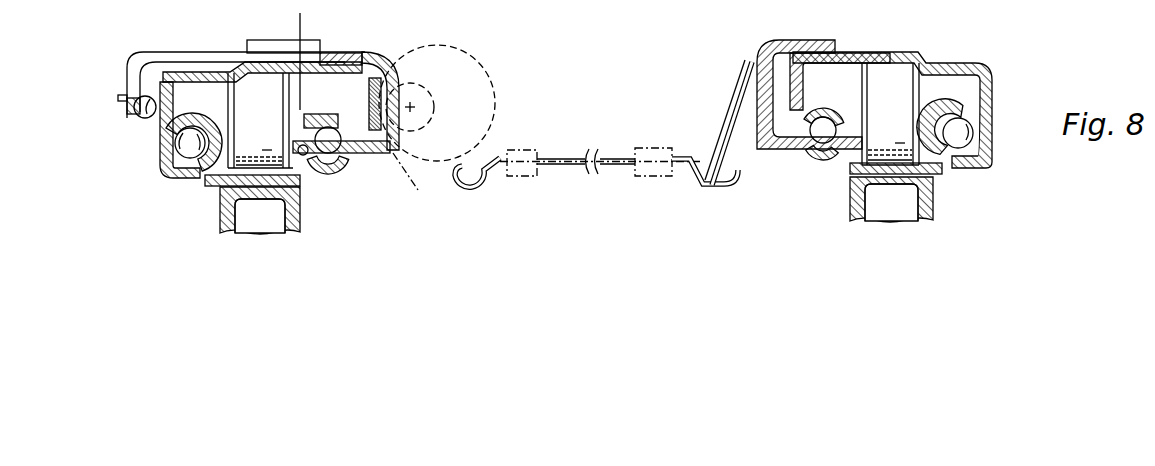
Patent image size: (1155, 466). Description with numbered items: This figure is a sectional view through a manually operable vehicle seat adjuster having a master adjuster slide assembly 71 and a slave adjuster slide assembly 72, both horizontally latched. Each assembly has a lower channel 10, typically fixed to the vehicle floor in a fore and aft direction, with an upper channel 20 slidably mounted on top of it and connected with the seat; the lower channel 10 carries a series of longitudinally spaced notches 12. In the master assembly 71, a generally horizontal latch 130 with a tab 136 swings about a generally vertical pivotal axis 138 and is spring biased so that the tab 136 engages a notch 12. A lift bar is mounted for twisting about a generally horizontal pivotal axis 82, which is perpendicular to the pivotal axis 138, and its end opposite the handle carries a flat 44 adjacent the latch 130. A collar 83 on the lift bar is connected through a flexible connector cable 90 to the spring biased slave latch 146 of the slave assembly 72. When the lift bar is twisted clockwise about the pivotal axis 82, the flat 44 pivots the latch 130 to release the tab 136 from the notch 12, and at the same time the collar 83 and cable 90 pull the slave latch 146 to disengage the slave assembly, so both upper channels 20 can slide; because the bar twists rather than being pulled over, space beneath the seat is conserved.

The lower channel 10 is at (210, 181).
The notches 12 is at (305, 156).
The upper channel 20 is at (172, 163).
The flat 44 is at (452, 186).
The master adjuster slide assembly 71 is at (172, 51).
The slave adjuster slide assembly 72 is at (800, 44).
The pivotal axis 82 is at (413, 104).
The collar 83 is at (482, 103).
The flexible connector cable 90 is at (563, 160).
The latch 130 is at (381, 60).
The latch tab 136 is at (305, 118).
The pivotal axis 138 is at (302, 28).
The slave latch 146 is at (752, 60).